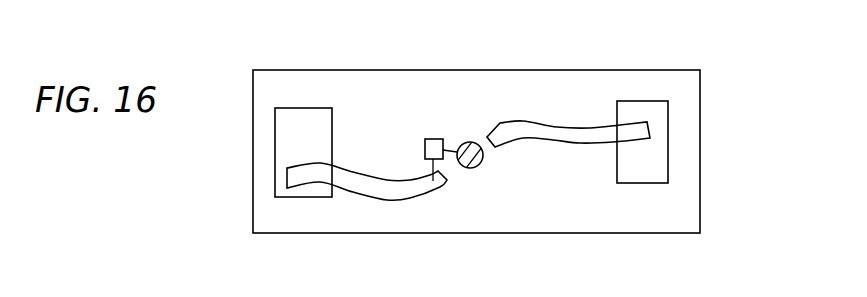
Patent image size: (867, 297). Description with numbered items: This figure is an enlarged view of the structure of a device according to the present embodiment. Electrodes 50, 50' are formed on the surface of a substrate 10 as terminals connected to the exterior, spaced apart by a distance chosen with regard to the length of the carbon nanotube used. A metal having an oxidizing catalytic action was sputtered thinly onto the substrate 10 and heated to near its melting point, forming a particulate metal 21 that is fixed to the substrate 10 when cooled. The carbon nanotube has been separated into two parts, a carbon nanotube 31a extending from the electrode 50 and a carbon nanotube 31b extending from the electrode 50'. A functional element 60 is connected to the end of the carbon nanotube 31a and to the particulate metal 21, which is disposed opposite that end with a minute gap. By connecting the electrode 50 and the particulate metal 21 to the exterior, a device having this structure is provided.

The substrate 10 is at (683, 143).
The electrode 50 is at (303, 114).
The electrode 50' is at (642, 107).
The carbon nanotube 31a is at (383, 188).
The carbon nanotube 31b is at (563, 127).
The functional element 60 is at (432, 139).
The particulate metal 21 is at (478, 167).